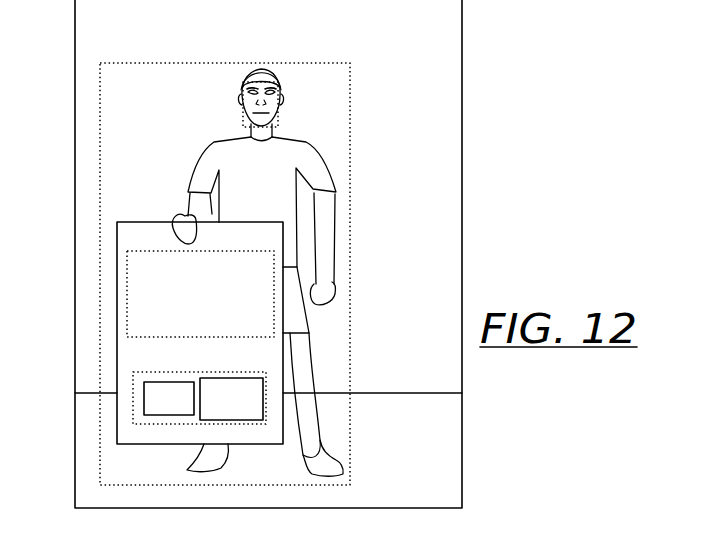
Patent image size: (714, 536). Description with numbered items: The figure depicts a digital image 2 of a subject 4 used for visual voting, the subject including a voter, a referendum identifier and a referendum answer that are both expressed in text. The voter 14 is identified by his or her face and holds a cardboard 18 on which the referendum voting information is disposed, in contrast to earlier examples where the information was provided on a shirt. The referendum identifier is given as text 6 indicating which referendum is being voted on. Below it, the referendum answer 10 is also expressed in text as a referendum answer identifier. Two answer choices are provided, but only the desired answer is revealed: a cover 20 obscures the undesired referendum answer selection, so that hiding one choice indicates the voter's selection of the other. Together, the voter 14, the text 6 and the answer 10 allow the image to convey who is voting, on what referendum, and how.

The digital image 2 is at (75, 20).
The subject of digital image 4 is at (100, 137).
The text referendum identifier 6 is at (127, 273).
The referendum answer in text 10 is at (133, 378).
The voter 14 is at (243, 112).
The cardboard 18 is at (117, 415).
The cover 20 is at (263, 411).